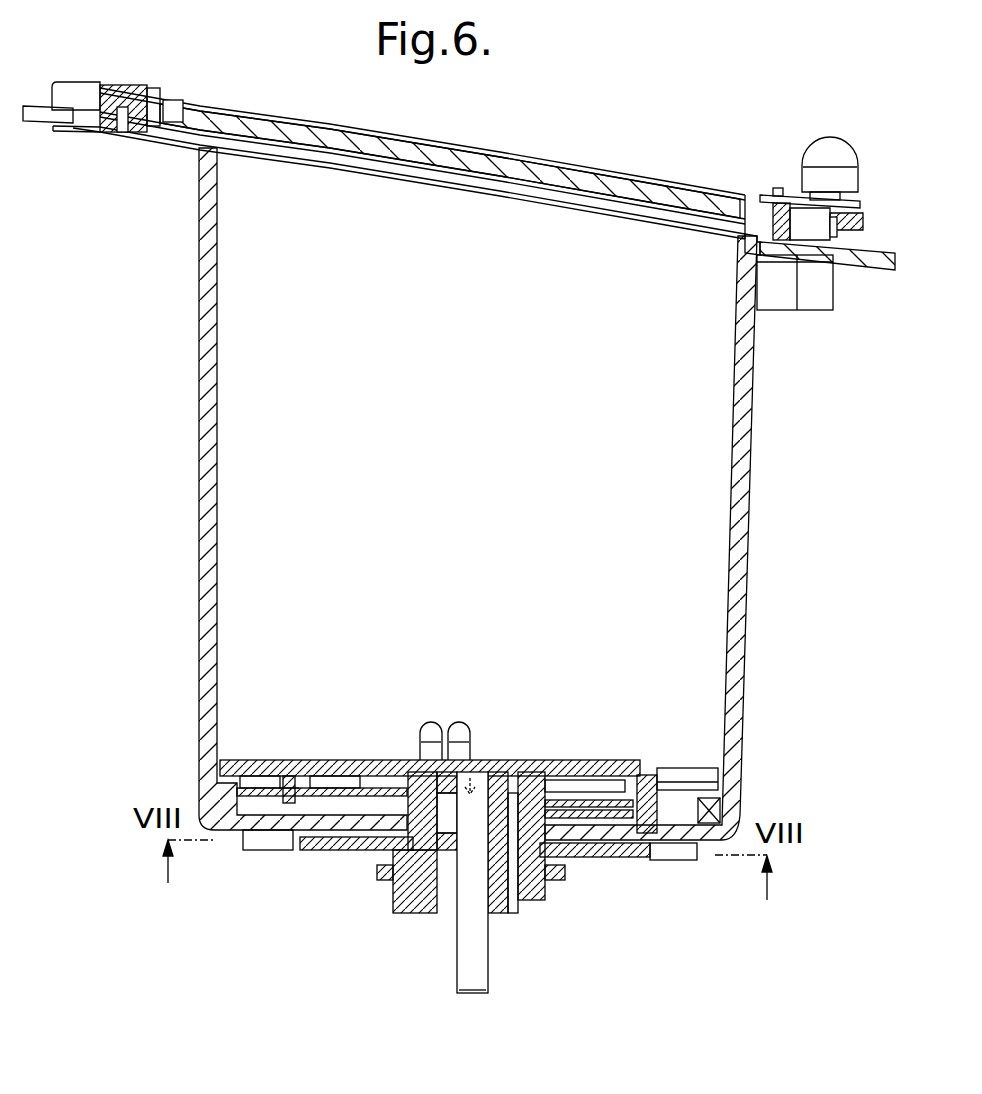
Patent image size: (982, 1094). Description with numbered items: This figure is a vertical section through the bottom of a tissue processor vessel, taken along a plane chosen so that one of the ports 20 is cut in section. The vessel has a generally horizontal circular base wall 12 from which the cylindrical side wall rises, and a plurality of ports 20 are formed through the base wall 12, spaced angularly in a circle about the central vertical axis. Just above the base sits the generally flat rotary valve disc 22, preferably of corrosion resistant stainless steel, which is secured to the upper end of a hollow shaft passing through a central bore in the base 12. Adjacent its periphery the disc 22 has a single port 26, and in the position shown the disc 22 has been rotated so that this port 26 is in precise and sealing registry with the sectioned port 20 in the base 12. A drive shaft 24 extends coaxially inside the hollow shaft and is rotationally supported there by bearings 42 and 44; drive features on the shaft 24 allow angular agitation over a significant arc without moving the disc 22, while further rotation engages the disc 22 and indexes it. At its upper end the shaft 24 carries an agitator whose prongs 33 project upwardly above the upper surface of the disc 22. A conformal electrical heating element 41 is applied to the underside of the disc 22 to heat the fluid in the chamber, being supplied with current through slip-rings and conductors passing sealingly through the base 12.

The base wall 12 is at (627, 835).
The port 20 is at (262, 842).
The rotary valve disc 22 is at (302, 758).
The shaft 24 is at (457, 955).
The port 26 is at (665, 785).
The prongs 33 is at (462, 720).
The conformal electrical heating element 41 is at (357, 758).
The bearing 42 is at (424, 912).
The bearing 44 is at (495, 895).